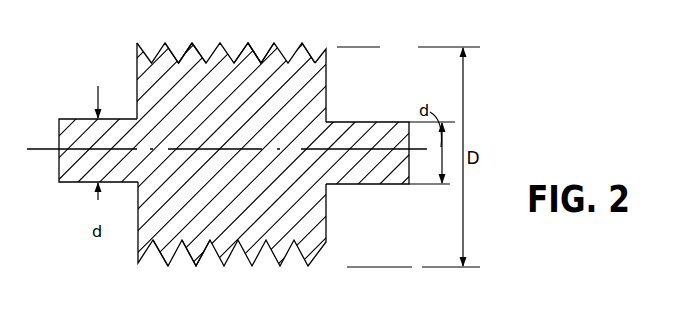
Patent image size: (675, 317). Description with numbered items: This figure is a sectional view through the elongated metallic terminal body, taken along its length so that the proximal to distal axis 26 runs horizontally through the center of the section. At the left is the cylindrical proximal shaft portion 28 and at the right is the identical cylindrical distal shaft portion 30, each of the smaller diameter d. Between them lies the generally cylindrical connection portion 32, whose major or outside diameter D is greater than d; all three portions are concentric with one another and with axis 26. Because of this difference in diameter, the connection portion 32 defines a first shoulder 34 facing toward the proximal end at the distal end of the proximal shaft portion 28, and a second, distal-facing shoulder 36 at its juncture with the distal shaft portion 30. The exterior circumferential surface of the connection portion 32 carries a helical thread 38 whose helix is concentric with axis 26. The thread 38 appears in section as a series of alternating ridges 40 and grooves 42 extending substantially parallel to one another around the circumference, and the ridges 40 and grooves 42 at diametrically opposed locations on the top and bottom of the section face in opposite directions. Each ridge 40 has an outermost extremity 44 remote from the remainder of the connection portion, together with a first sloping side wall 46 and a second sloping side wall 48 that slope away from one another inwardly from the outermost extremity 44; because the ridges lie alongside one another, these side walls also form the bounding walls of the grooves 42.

The proximal to distal axis 26 is at (49, 148).
The proximal shaft portion 28 is at (73, 118).
The distal shaft portion 30 is at (368, 121).
The connection portion 32 is at (221, 39).
The first shoulder 34 is at (137, 55).
The second shoulder 36 is at (329, 61).
The helical thread 38 is at (183, 53).
The ridge 40 is at (248, 39).
The groove 42 is at (260, 62).
The outermost extremity 44 is at (191, 40).
The first sloping side wall 46 is at (197, 46).
The second sloping side wall 48 is at (189, 42).